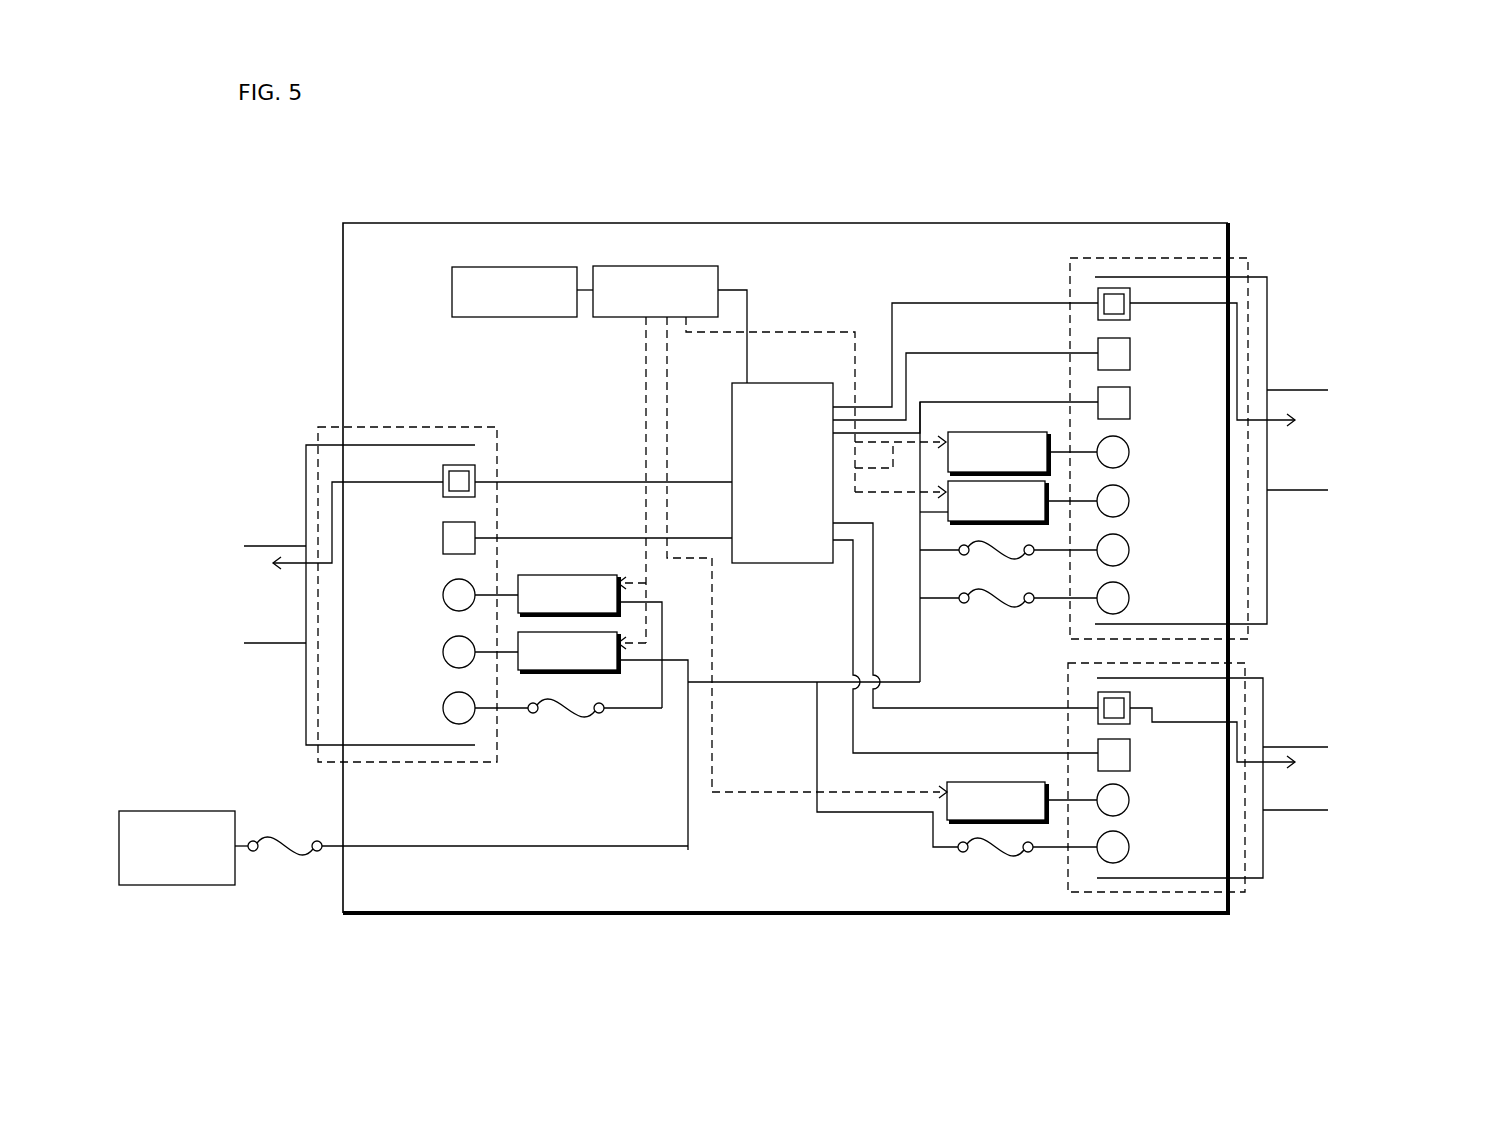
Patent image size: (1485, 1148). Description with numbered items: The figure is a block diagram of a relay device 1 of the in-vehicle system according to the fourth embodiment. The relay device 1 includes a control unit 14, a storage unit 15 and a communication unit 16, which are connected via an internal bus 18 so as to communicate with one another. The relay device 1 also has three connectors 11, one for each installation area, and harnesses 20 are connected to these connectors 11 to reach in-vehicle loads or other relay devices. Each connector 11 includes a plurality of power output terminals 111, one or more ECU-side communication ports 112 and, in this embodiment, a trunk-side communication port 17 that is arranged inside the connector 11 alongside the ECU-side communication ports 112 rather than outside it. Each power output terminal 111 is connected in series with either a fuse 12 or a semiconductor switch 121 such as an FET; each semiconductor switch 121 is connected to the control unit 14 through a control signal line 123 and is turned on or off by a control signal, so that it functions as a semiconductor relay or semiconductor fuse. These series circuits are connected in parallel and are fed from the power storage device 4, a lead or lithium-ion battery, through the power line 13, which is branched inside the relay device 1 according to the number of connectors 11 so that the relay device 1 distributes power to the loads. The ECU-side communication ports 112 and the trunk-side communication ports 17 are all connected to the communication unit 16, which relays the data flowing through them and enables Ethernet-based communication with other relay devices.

The relay device 1 is at (975, 218).
The power storage device 4 is at (190, 811).
The connector 11 is at (317, 432).
The fuse 12 is at (555, 716).
The power line 13 is at (550, 846).
The control unit 14 is at (640, 266).
The storage unit 15 is at (497, 267).
The communication unit 16 is at (788, 383).
The trunk-side communication port 17 is at (441, 462).
The internal bus 18 is at (738, 290).
The harness 20 is at (257, 546).
The power output terminal 111 is at (436, 596).
The ECU-side communication port 112 is at (436, 537).
The semiconductor switch 121 is at (530, 575).
The control signal line 123 is at (644, 364).